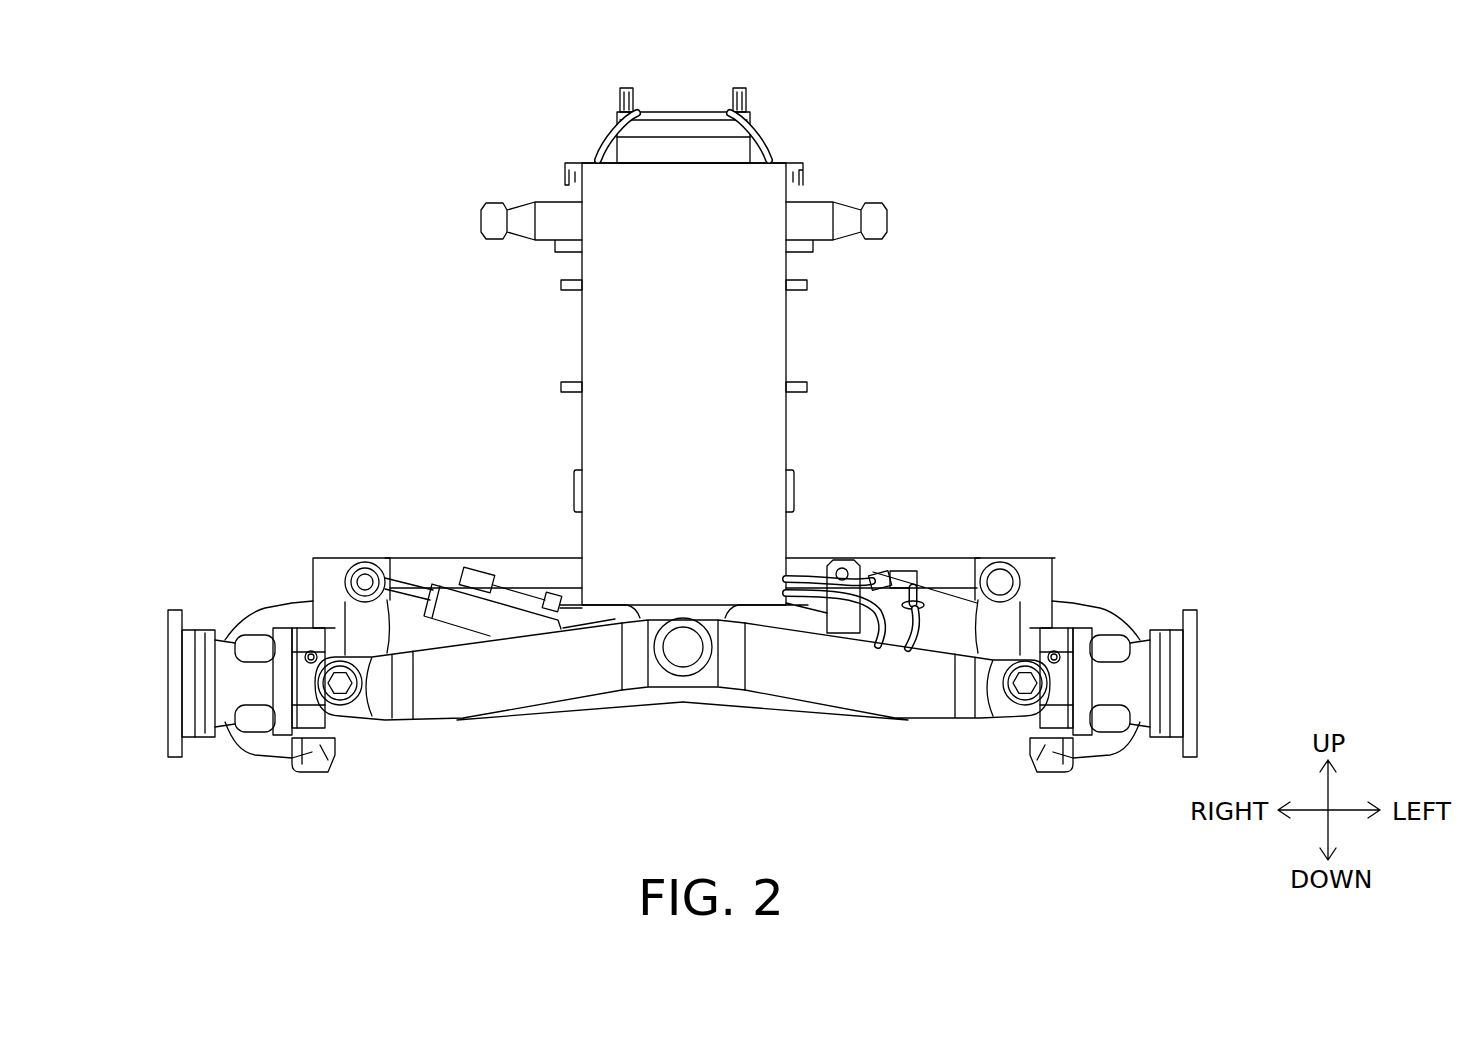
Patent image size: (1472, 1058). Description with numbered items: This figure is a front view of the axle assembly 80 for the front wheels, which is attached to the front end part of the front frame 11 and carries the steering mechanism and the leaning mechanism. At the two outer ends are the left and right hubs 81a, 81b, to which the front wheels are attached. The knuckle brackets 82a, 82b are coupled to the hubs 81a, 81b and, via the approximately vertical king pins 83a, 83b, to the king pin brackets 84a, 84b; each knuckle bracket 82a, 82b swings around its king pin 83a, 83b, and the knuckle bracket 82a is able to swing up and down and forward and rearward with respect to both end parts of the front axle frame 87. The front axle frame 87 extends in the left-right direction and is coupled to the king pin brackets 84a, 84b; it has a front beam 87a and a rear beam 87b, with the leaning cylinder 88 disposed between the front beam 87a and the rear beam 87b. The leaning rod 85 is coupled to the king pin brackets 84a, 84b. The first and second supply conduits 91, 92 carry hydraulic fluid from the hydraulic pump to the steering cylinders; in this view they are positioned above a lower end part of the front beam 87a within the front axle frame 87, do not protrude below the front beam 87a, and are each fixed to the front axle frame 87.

The front frame 11 is at (670, 160).
The axle assembly 80 is at (516, 751).
The hub 81a is at (1192, 610).
The hub 81b is at (170, 608).
The knuckle bracket 82a is at (1137, 640).
The knuckle bracket 82b is at (245, 623).
The king pin 83a is at (1053, 767).
The king pin 83b is at (310, 768).
The king pin bracket 84a is at (1005, 640).
The king pin bracket 84b is at (372, 637).
The leaning rod 85 is at (902, 558).
The front axle frame 87 is at (682, 735).
The front beam 87a is at (765, 677).
The rear beam 87b is at (680, 692).
The leaning cylinder 88 is at (448, 602).
The first supply conduit 91 is at (617, 130).
The second supply conduit 92 is at (758, 130).